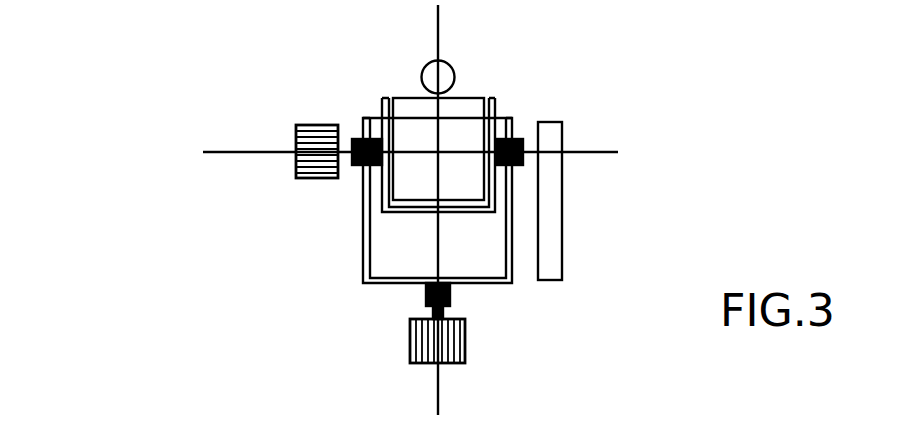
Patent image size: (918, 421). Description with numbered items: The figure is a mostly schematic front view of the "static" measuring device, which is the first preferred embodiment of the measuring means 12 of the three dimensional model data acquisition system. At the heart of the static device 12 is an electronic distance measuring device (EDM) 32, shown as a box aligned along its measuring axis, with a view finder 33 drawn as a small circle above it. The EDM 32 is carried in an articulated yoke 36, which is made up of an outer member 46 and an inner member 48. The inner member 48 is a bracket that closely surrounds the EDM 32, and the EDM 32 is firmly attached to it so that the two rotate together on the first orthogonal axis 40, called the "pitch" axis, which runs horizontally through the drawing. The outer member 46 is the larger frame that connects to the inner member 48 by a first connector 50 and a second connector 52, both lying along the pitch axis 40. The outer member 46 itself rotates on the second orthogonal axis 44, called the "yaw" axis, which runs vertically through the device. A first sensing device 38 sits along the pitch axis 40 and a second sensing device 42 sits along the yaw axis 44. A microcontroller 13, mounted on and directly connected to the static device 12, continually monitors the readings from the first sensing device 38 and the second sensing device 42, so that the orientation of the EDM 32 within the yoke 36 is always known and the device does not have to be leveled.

The measuring means 12 is at (145, 213).
The microcontroller 13 is at (563, 266).
The electronic distance measuring device 32 is at (470, 97).
The view finder 33 is at (422, 72).
The articulated yoke 36 is at (338, 269).
The first sensing device 38 is at (298, 125).
The first orthogonal axis 40 is at (225, 150).
The second sensing device 42 is at (466, 342).
The second orthogonal axis 44 is at (438, 410).
The outer member 46 is at (363, 232).
The inner member 48 is at (382, 110).
The first connector 50 is at (358, 139).
The second connector 52 is at (517, 135).